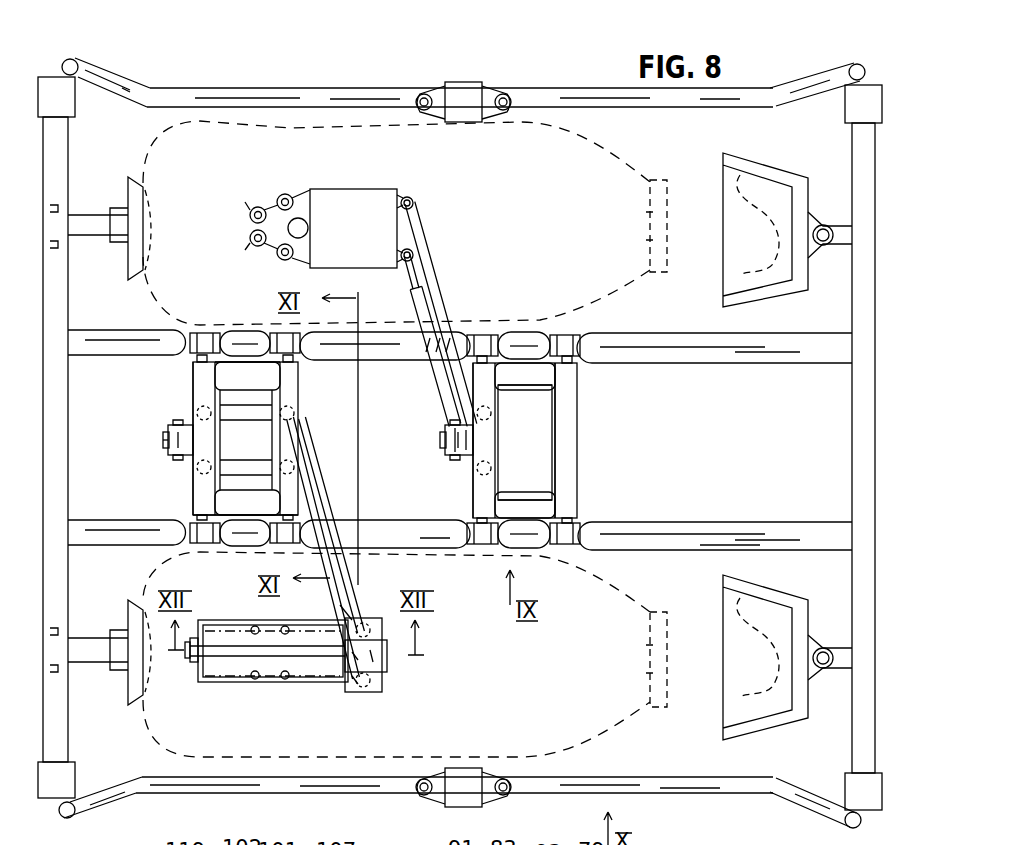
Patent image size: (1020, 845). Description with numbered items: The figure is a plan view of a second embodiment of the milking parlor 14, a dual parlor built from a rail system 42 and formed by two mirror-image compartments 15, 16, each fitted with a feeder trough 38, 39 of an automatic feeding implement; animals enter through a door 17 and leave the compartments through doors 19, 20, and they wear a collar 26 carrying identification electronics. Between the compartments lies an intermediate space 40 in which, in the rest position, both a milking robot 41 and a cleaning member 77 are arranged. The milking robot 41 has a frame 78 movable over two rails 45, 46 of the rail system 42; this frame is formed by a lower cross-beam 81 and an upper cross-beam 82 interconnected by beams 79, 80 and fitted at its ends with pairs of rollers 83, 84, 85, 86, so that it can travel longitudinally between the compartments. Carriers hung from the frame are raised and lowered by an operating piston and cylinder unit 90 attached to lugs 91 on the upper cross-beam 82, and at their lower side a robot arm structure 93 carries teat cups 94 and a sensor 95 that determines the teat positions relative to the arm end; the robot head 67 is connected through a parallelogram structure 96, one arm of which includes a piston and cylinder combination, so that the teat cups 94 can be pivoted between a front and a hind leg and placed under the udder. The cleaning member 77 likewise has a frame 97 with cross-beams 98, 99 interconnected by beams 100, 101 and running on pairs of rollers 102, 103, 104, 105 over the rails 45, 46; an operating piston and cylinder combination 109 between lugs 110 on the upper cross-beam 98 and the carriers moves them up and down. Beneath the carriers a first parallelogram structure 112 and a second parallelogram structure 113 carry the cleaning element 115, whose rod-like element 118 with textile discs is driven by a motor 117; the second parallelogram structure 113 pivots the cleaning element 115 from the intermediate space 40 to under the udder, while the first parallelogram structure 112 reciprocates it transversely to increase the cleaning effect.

The milking parlor 14 is at (628, 153).
The compartment 15 is at (800, 118).
The compartment 16 is at (775, 795).
The door 17 is at (262, 96).
The door 19 is at (553, 96).
The door 20 is at (655, 782).
The collar 26 is at (656, 185).
The feeder trough 38 is at (778, 278).
The feeder trough 39 is at (770, 612).
The intermediate space 40 is at (685, 350).
The milking robot 41 is at (534, 444).
The rail system 42 is at (83, 416).
The rail 45 is at (745, 363).
The rail 46 is at (725, 525).
The robot head 67 is at (350, 190).
The cleaning member 77 is at (258, 449).
The frame 78 is at (589, 431).
The beam 79 is at (535, 378).
The beam 80 is at (525, 502).
The cross-beam 81 is at (568, 475).
The cross-beam 82 is at (480, 498).
The pair of rollers 83 is at (490, 548).
The pair of rollers 84 is at (570, 548).
The pair of rollers 85 is at (570, 333).
The pair of rollers 86 is at (498, 290).
The operating piston and cylinder unit 90 is at (445, 440).
The lug 91 is at (450, 425).
The robot arm structure 93 is at (452, 258).
The teat cups 94 is at (283, 194).
The sensor 95 is at (308, 226).
The parallelogram structure 96 is at (428, 300).
The frame 97 is at (182, 504).
The cross-beam 98 is at (195, 488).
The cross-beam 99 is at (345, 398).
The beam 100 is at (215, 378).
The beam 101 is at (294, 486).
The pair of rollers 102 is at (205, 546).
The pair of rollers 103 is at (315, 520).
The pair of rollers 104 is at (312, 352).
The pair of rollers 105 is at (203, 333).
The operating piston and cylinder combination 109 is at (165, 444).
The lug 110 is at (170, 425).
The first parallelogram structure 112 is at (258, 410).
The second parallelogram structure 113 is at (365, 615).
The cleaning element 115 is at (261, 695).
The motor 117 is at (388, 658).
The rod-like element 118 is at (322, 668).